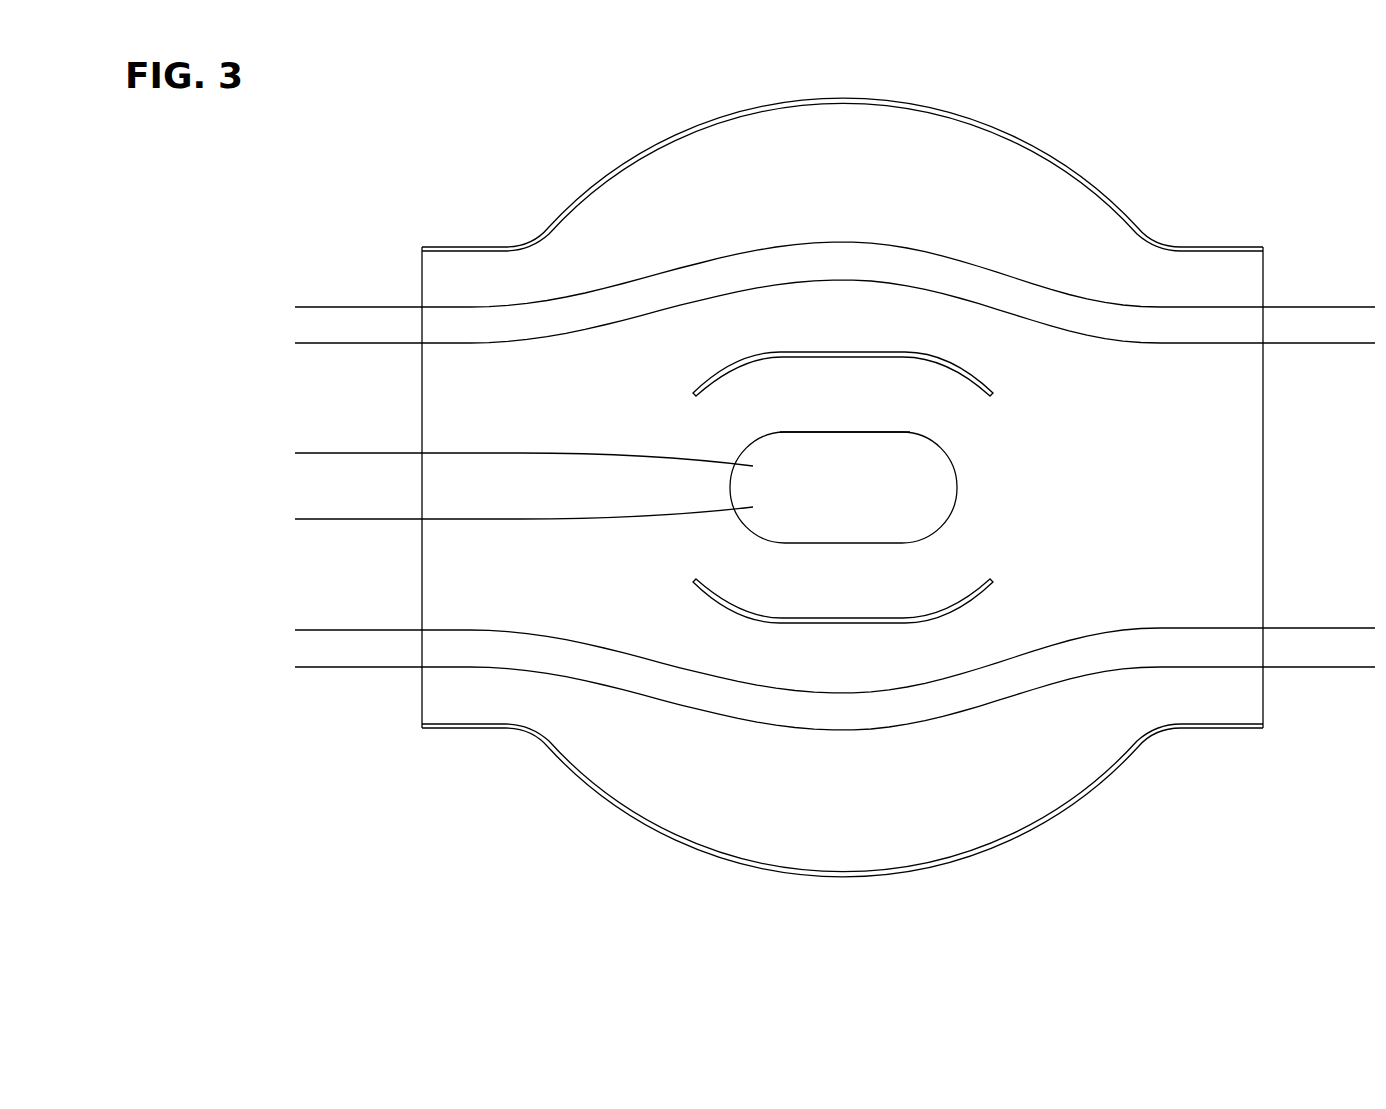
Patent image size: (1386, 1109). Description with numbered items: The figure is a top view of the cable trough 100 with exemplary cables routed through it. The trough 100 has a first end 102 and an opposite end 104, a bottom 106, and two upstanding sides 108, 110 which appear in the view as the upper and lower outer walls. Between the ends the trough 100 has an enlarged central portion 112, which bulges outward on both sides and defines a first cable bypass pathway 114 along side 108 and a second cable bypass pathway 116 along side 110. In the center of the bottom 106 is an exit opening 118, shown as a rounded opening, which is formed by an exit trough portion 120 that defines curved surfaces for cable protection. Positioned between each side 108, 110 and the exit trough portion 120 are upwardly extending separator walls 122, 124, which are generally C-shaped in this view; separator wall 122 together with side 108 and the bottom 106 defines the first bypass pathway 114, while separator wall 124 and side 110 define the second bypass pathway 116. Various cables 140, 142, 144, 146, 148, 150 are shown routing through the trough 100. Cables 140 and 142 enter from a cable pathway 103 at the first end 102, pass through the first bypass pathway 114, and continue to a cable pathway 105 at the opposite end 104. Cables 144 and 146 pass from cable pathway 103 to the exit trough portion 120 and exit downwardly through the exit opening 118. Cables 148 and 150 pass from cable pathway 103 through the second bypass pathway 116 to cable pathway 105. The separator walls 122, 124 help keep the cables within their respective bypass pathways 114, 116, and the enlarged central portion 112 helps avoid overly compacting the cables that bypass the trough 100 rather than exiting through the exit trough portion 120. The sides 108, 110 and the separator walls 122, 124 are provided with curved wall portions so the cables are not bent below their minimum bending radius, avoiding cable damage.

The trough 100 is at (523, 178).
The first end 102 is at (420, 690).
The cable pathway 103 is at (498, 407).
The opposite end 104 is at (1265, 692).
The cable pathway 105 is at (1218, 445).
The bottom 106 is at (1124, 522).
The side 108 is at (1100, 195).
The side 110 is at (1088, 790).
The enlarged central portion 112 is at (863, 878).
The first cable bypass pathway 114 is at (908, 165).
The second cable bypass pathway 116 is at (868, 818).
The exit opening 118 is at (870, 503).
The exit trough portion 120 is at (853, 430).
The separator wall 122 is at (990, 376).
The separator wall 124 is at (968, 597).
The cable 140 is at (732, 252).
The cable 142 is at (740, 287).
The cable 144 is at (537, 453).
The cable 146 is at (535, 519).
The cable 148 is at (528, 630).
The cable 150 is at (617, 685).